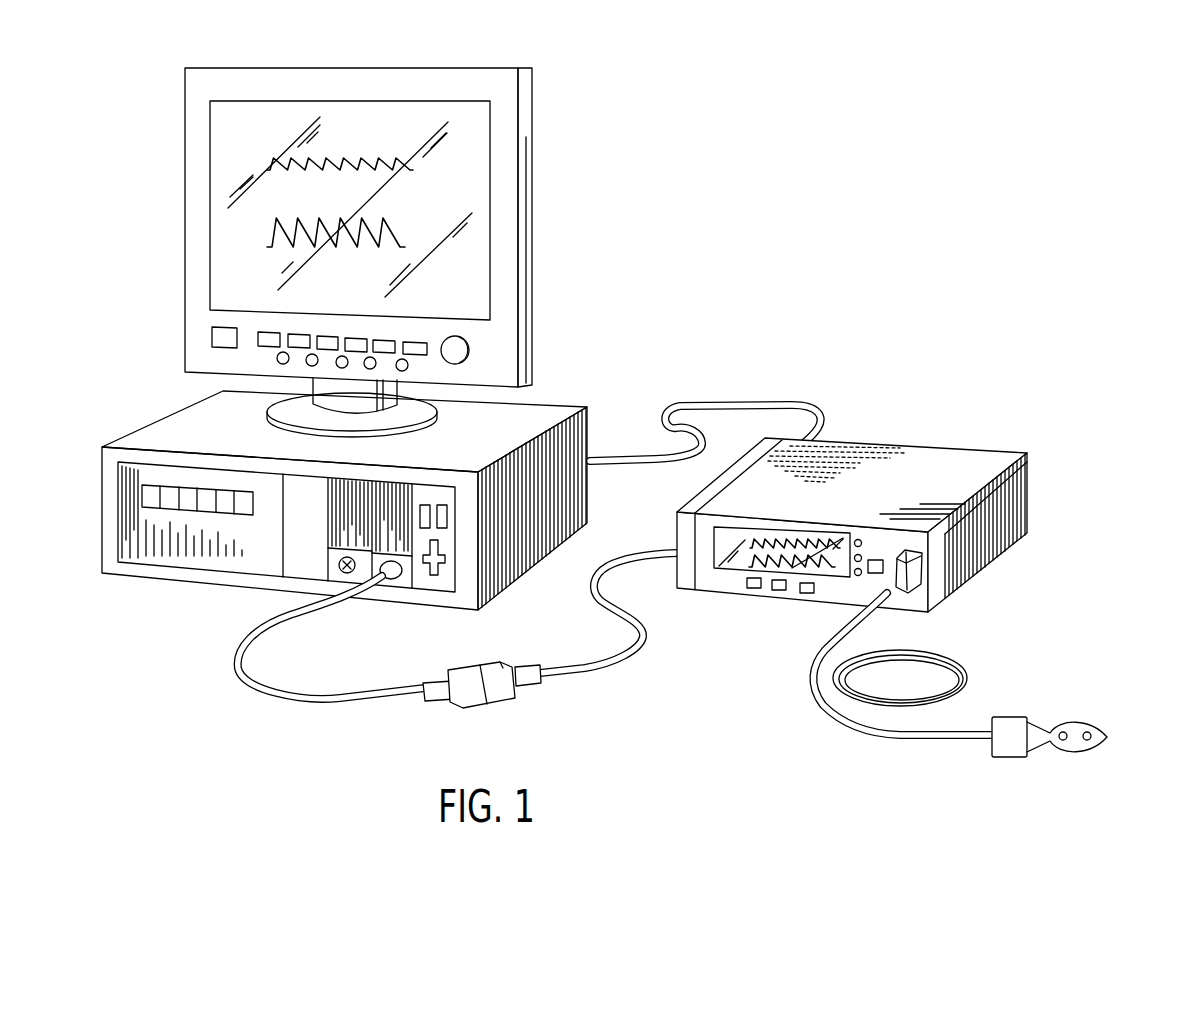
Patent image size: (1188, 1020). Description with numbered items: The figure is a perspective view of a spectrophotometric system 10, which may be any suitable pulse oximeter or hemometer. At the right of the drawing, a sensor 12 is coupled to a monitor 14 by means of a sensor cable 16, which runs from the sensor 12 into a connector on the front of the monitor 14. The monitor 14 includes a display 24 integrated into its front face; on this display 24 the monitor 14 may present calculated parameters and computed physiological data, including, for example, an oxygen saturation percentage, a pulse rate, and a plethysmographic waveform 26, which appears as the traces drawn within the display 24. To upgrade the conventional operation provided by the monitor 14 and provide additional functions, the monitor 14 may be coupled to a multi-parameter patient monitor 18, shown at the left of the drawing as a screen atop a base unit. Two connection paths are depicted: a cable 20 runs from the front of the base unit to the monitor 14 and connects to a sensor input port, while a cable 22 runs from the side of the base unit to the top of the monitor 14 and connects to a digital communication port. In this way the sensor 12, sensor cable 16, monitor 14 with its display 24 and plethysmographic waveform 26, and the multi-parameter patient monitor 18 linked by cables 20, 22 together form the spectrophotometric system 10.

The spectrophotometric system 10 is at (880, 275).
The sensor 12 is at (1112, 728).
The monitor 14 is at (852, 527).
The sensor cable 16 is at (843, 722).
The multi-parameter patient monitor 18 is at (527, 108).
The cable 20 is at (582, 672).
The cable 22 is at (729, 403).
The display 24 is at (732, 572).
The plethysmographic waveform 26 is at (775, 570).